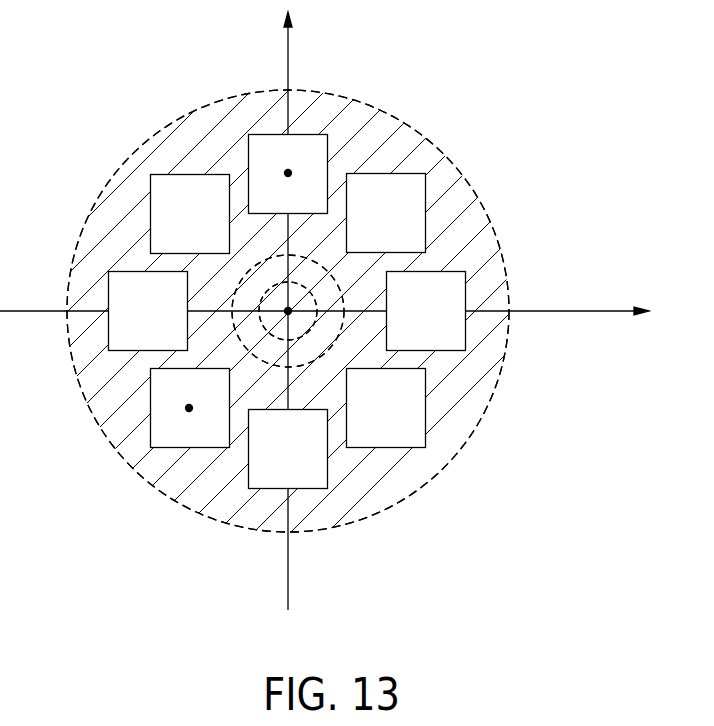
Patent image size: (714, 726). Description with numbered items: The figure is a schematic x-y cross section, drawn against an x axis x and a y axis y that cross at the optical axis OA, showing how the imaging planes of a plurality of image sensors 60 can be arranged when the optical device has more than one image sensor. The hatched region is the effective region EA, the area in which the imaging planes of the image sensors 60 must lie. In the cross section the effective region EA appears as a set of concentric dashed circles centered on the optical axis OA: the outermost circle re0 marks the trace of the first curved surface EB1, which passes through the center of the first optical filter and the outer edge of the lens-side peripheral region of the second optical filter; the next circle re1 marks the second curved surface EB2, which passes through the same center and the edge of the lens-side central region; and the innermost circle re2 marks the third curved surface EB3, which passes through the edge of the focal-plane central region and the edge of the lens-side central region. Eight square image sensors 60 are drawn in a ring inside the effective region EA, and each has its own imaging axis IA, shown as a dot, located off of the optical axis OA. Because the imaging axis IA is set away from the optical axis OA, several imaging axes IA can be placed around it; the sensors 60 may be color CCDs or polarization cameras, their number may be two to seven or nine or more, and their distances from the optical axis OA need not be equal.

The image sensor 60 is at (262, 135).
The imaging axis IA is at (290, 172).
The optical axis OA is at (288, 311).
The effective region EA is at (460, 195).
The first curved surface EB1 is at (505, 322).
The second curved surface EB2 is at (343, 327).
The third curved surface EB3 is at (304, 337).
The outer radius re0 is at (288, 311).
The first radius re1 is at (288, 299).
The second radius re2 is at (307, 311).
The x direction x is at (297, 311).
The y direction y is at (325, 299).